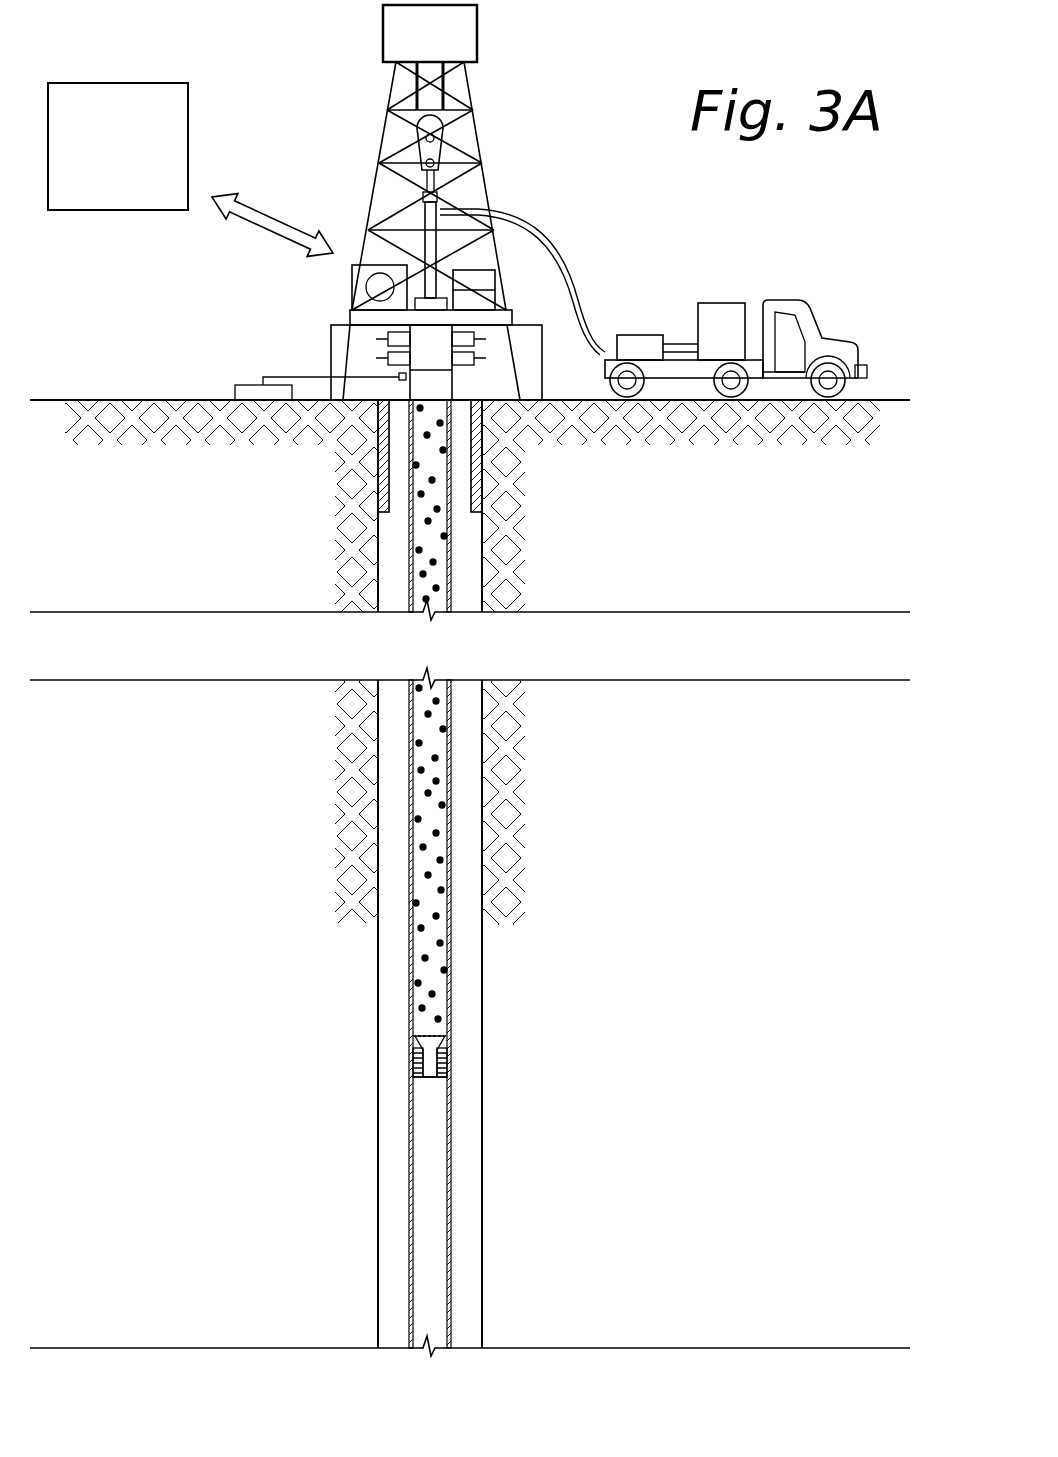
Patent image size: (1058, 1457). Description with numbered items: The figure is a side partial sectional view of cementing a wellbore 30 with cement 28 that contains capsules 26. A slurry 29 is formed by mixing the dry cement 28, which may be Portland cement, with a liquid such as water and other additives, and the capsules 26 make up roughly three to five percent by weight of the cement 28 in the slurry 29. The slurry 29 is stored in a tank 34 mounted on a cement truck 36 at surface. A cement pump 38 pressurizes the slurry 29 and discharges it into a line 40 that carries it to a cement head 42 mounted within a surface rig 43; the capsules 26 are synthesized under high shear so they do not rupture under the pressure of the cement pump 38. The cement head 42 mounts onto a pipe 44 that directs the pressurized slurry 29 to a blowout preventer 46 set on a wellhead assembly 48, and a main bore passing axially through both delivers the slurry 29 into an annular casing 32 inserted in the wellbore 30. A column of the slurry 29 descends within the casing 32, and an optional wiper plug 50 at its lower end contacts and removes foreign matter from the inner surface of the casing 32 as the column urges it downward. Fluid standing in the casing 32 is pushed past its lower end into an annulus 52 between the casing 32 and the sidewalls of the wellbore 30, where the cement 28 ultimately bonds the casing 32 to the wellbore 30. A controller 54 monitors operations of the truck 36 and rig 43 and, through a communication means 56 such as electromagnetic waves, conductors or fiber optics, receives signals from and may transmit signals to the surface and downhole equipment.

The capsules 26 is at (418, 975).
The cement 28 is at (418, 865).
The slurry 29 is at (418, 766).
The wellbore 30 is at (400, 1276).
The casing 32 is at (412, 1133).
The tank 34 is at (720, 303).
The cement truck 36 is at (828, 262).
The cement pump 38 is at (638, 335).
The line 40 is at (566, 262).
The cement head 42 is at (420, 205).
The surface rig 43 is at (540, 82).
The pipe 44 is at (430, 288).
The blowout preventer 46 is at (425, 357).
The wellhead assembly 48 is at (440, 381).
The wiper plug 50 is at (428, 1045).
The annulus 52 is at (395, 1205).
The controller 54 is at (130, 162).
The communication means 56 is at (268, 236).